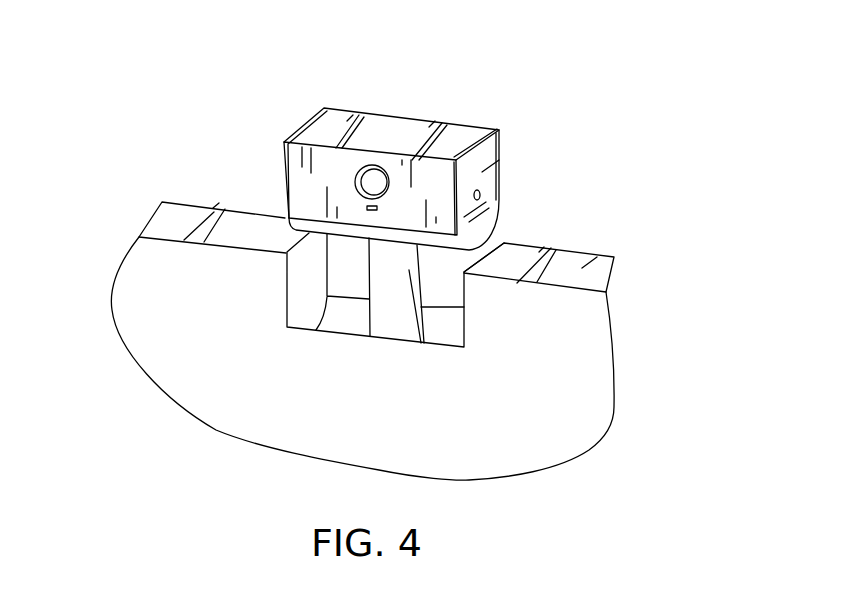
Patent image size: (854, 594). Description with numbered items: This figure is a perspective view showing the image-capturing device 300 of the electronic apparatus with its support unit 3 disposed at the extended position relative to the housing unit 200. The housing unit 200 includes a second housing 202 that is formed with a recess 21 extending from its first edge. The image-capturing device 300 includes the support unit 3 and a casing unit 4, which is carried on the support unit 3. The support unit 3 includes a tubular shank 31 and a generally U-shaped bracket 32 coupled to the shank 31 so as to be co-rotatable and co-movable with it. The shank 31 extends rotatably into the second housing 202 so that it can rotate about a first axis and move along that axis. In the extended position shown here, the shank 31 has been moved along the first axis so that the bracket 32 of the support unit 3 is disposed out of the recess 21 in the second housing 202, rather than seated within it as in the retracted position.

The support unit 3 is at (417, 209).
The image-capturing device 300 is at (463, 162).
The casing unit 4 is at (387, 163).
The bracket 32 is at (520, 189).
The shank 31 is at (387, 308).
The recess 21 is at (467, 293).
The second housing 202 is at (603, 254).
The housing unit 200 is at (425, 341).